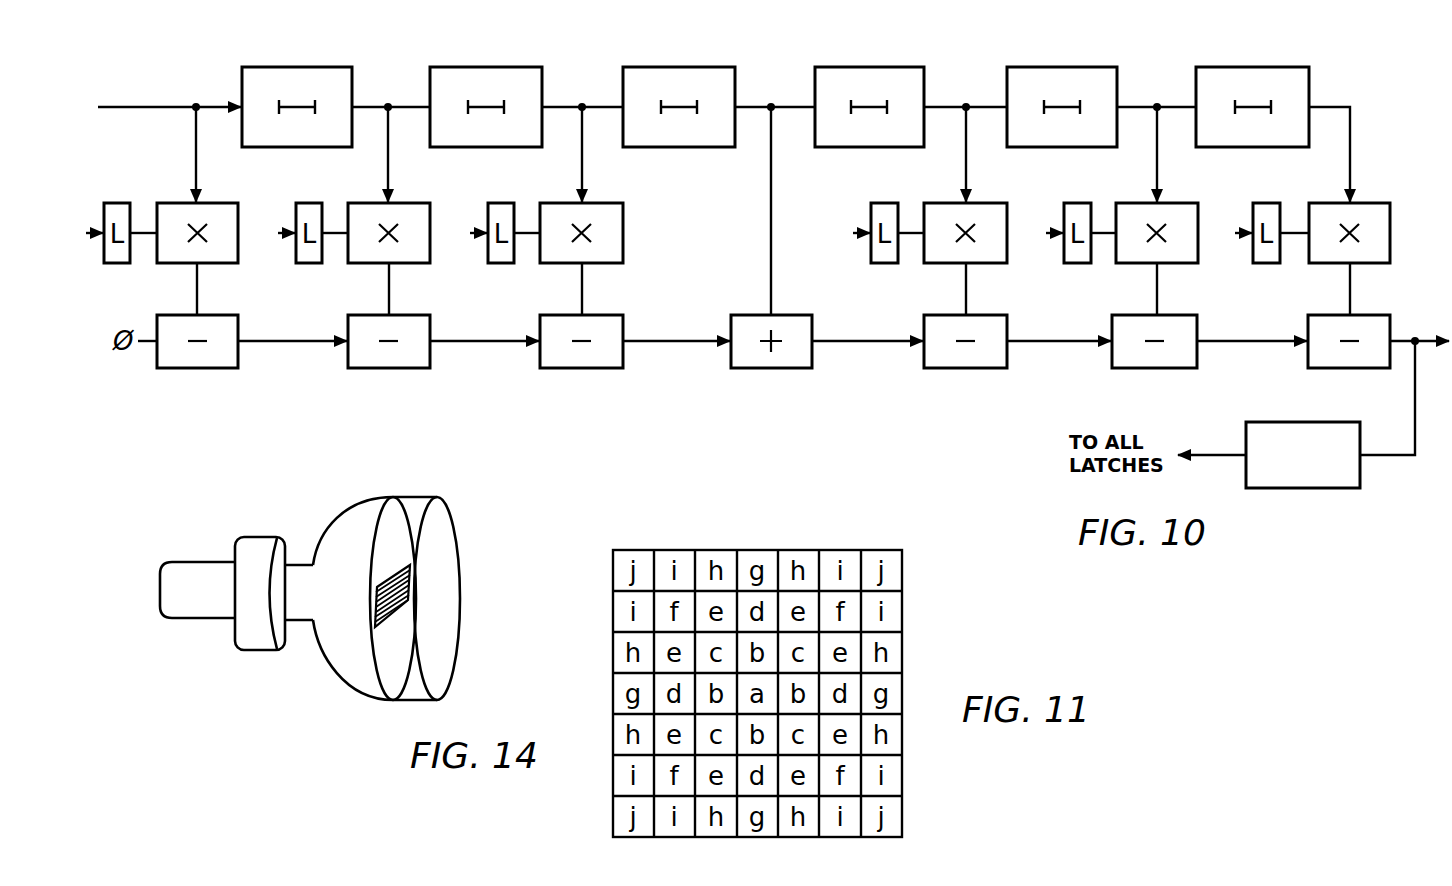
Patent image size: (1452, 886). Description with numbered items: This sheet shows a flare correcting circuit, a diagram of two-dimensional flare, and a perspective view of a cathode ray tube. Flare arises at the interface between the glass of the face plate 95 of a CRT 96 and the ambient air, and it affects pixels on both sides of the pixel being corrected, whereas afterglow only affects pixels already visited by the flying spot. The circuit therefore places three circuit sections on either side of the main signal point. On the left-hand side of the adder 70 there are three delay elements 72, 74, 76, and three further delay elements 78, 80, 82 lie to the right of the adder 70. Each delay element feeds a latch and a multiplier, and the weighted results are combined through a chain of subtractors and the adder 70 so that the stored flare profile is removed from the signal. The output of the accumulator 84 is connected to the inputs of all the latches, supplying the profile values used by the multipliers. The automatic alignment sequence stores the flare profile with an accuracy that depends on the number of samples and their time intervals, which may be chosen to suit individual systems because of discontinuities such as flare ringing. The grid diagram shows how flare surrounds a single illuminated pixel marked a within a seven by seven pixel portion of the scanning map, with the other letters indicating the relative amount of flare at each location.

In FIG. 10, the adder 70 is at (792, 370).
In FIG. 10, the delay element 72 is at (326, 66).
In FIG. 10, the delay element 74 is at (534, 66).
In FIG. 10, the delay element 76 is at (714, 66).
In FIG. 10, the delay element 78 is at (908, 66).
In FIG. 10, the delay element 80 is at (1093, 66).
In FIG. 10, the delay element 82 is at (1277, 66).
In FIG. 10, the accumulator 84 is at (1283, 490).
In FIG. 14, the face plate 95 is at (447, 611).
In FIG. 14, the CRT 96 is at (392, 706).